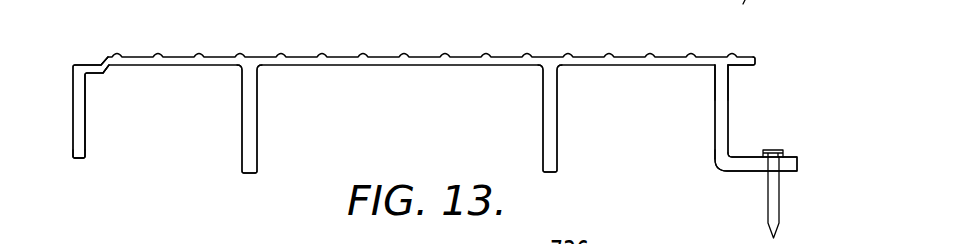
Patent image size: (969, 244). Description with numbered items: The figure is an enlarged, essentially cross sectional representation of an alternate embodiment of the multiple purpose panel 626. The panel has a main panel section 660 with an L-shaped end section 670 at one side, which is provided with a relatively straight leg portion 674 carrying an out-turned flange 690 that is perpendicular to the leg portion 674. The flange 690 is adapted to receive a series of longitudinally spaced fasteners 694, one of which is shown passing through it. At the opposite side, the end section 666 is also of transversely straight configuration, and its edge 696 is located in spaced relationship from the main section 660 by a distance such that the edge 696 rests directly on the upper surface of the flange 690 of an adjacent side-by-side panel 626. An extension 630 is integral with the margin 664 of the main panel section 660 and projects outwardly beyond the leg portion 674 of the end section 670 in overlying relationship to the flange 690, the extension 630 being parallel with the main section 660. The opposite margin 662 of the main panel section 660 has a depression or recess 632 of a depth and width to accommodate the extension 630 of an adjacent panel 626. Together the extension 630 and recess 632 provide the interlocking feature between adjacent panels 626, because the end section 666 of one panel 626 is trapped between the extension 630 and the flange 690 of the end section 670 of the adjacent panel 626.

The panel 626 is at (514, 50).
The extension 630 is at (752, 61).
The depression or recess 632 is at (101, 60).
The main panel section 660 is at (223, 58).
The margin 662 is at (72, 65).
The margin 664 is at (717, 57).
The end section 666 is at (88, 97).
The L-shaped end section 670 is at (713, 88).
The leg portion 674 is at (723, 118).
The out-turned flange 690 is at (755, 171).
The fasteners 694 is at (782, 190).
The edge 696 is at (77, 160).